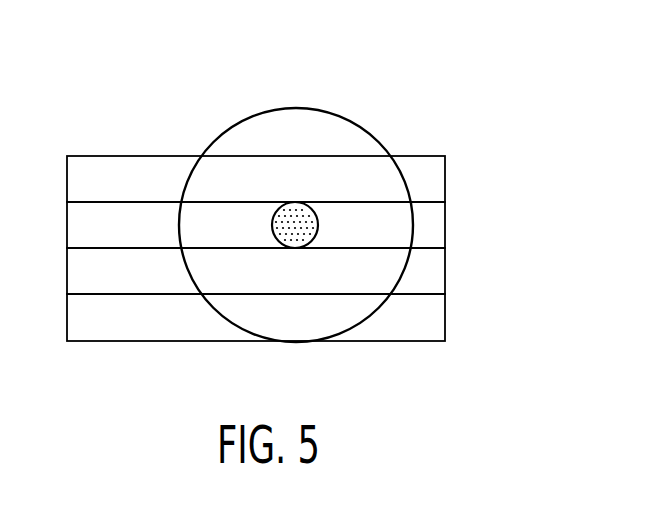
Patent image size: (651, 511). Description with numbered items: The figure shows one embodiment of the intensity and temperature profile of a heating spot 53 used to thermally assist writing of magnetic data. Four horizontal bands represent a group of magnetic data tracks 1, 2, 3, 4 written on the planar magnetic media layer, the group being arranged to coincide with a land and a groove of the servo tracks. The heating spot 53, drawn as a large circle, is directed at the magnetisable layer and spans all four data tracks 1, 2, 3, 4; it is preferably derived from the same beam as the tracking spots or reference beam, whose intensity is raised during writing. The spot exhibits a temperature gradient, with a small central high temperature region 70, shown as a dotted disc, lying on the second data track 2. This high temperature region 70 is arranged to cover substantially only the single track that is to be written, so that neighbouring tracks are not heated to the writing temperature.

The data track 1 is at (241, 179).
The data track 2 is at (241, 225).
The data track 3 is at (241, 271).
The data track 4 is at (241, 317).
The heating spot 53 is at (356, 108).
The high temperature region 70 is at (333, 240).